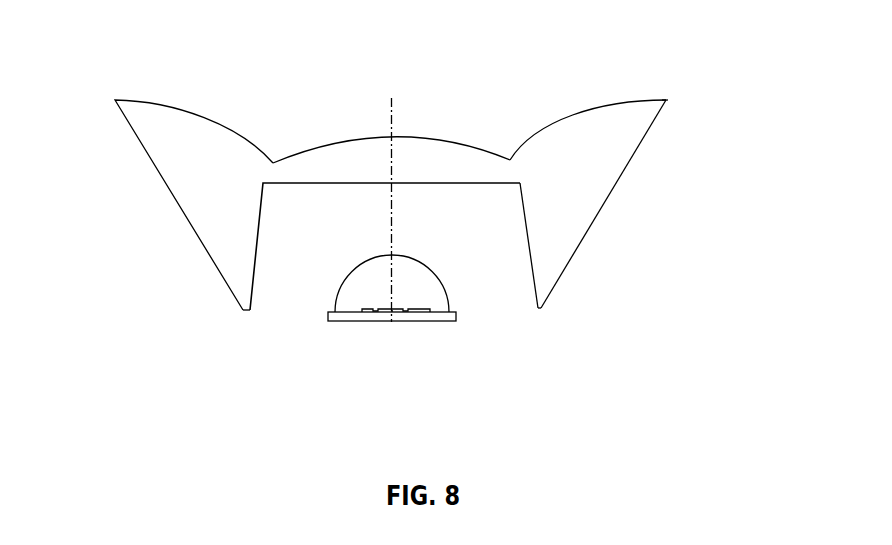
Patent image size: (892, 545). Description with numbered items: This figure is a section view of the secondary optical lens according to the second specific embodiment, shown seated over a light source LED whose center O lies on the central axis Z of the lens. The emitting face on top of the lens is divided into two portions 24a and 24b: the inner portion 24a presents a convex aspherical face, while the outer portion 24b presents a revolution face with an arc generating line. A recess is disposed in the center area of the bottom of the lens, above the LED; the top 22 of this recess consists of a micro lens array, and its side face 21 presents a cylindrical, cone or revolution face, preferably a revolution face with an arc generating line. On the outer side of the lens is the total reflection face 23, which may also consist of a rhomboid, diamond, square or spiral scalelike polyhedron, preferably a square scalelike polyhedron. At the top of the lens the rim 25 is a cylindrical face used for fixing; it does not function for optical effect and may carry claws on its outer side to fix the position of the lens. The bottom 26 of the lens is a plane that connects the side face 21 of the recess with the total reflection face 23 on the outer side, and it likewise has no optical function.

The side face of the recess 21 is at (520, 223).
The top of the recess 22 is at (347, 183).
The total reflection face 23 is at (595, 220).
The emitting face portion 24a is at (430, 138).
The emitting face portion 24b is at (560, 118).
The rim 25 is at (666, 100).
The bottom of the lens 26 is at (537, 310).
The optical axis Z is at (381, 209).
The light source center O is at (381, 296).
The light emitting diode LED is at (398, 321).